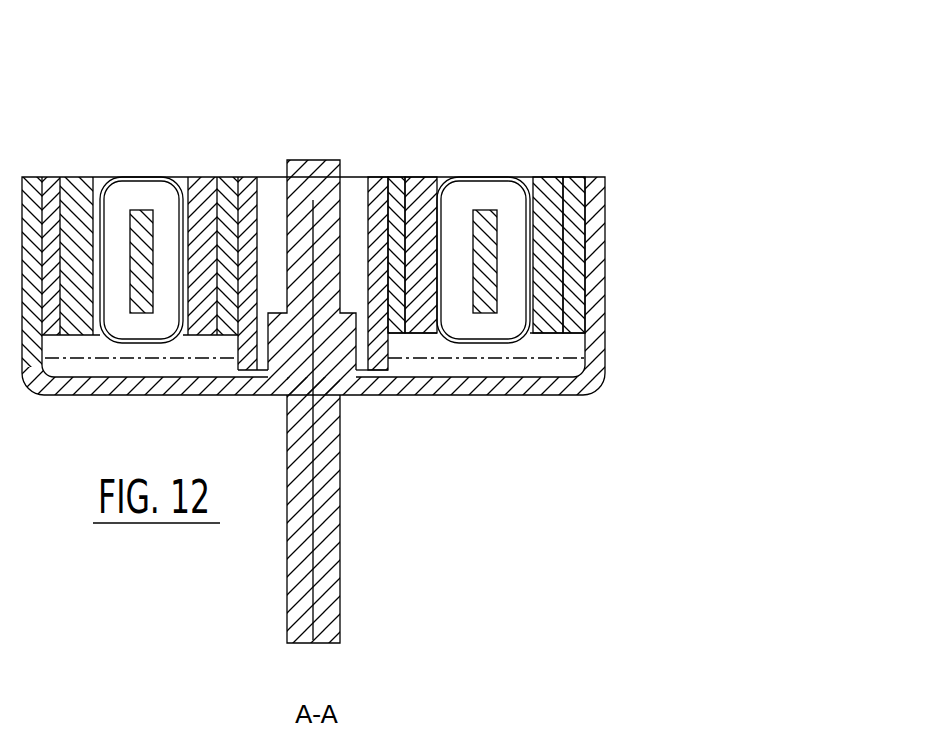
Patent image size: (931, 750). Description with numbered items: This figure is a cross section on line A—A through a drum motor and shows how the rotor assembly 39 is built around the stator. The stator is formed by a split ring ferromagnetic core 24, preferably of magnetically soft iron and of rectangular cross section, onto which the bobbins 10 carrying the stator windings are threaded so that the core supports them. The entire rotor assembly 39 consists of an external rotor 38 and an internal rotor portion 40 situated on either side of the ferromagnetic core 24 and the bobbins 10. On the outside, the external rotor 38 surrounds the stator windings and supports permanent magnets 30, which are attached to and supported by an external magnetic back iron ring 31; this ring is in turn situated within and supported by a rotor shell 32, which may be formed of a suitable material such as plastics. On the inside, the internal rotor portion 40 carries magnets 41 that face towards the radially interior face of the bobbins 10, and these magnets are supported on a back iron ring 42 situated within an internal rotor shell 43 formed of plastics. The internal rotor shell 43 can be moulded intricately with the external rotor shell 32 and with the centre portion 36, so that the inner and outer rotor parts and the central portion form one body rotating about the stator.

The bobbin 10 is at (386, 323).
The ferromagnetic core 24 is at (142, 206).
The permanent magnets 30 is at (552, 172).
The external magnetic back iron ring 31 is at (580, 172).
The rotor shell 32 is at (600, 223).
The centre portion 36 is at (387, 358).
The external rotor 38 is at (386, 269).
The rotor assembly 39 is at (368, 406).
The internal rotor portion 40 is at (427, 168).
The magnets 41 is at (419, 168).
The back iron ring 42 is at (395, 172).
The internal rotor shell 43 is at (375, 172).